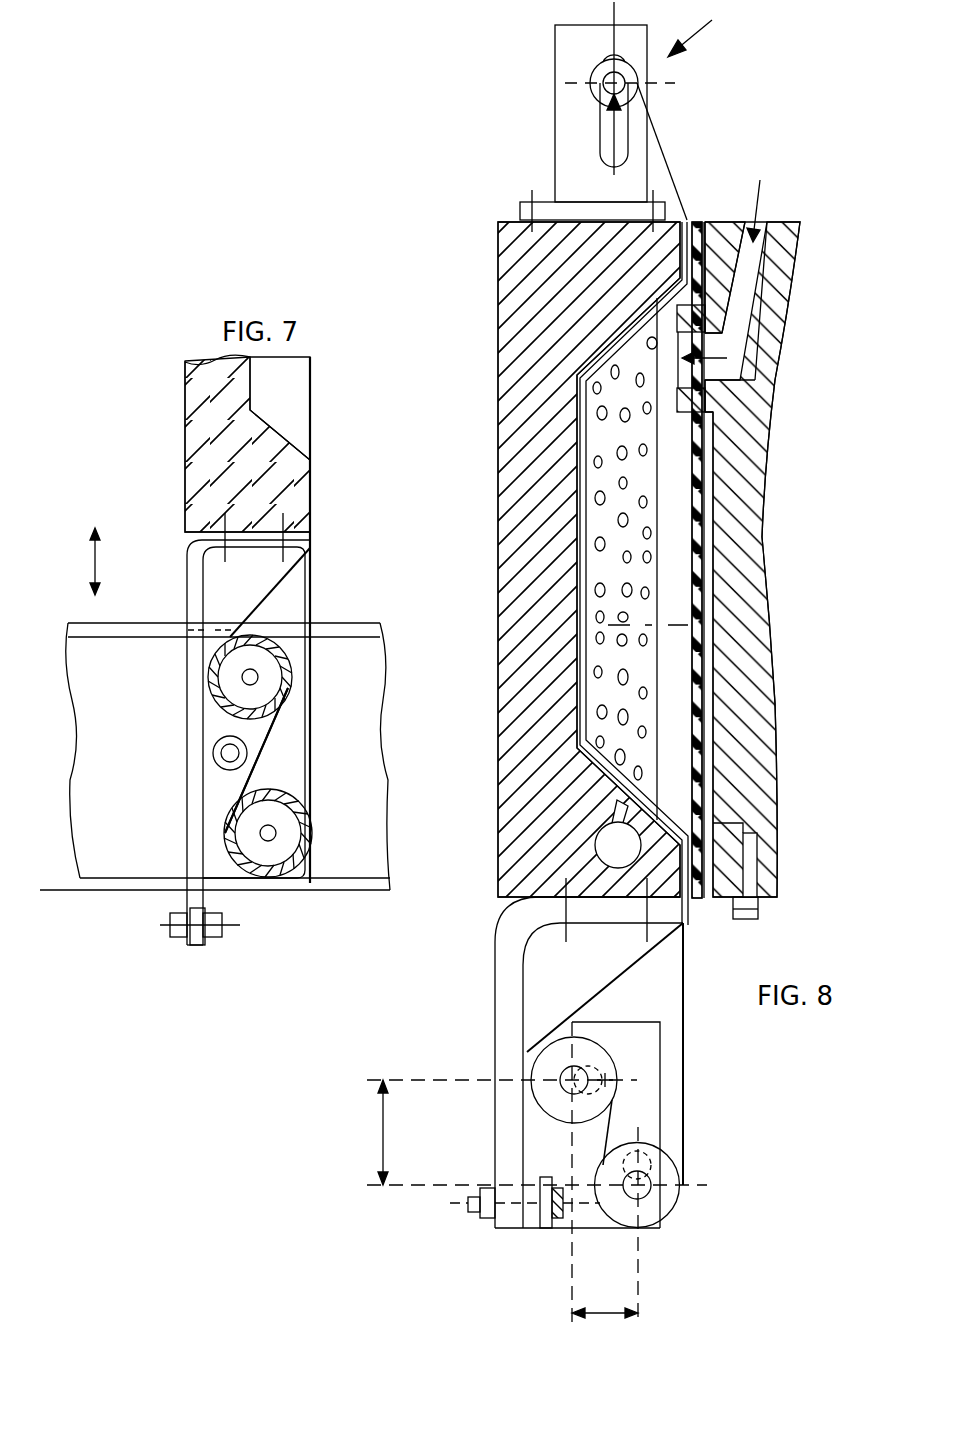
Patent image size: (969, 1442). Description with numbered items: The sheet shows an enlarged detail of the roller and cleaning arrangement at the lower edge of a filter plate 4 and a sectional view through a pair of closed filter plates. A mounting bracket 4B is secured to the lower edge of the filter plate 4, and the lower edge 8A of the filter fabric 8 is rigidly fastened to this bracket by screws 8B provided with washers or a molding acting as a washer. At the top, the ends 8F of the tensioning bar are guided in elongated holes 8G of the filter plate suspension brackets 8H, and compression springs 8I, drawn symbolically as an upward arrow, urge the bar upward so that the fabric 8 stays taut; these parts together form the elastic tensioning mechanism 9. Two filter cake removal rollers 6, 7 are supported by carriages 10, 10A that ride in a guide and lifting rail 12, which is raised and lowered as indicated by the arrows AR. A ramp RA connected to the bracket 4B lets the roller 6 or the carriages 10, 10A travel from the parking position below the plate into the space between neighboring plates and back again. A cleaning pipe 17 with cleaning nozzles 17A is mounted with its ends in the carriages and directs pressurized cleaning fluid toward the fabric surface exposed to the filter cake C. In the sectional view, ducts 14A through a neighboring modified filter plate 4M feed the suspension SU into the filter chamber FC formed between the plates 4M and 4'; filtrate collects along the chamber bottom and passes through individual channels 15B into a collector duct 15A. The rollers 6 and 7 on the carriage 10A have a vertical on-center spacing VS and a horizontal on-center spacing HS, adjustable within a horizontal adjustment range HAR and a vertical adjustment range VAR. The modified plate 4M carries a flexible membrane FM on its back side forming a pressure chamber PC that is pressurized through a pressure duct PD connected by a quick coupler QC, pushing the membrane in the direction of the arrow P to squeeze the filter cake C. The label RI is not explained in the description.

In FIG. 7, the filter plate 4 is at (232, 443).
In FIG. 8, the filter plate 4' is at (570, 582).
In FIG. 7, the mounting bracket 4B is at (187, 586).
In FIG. 8, the mounting bracket 4B is at (505, 989).
In FIG. 8, the modified filter plate 4M is at (767, 755).
In FIG. 7, the roller 6 is at (283, 692).
In FIG. 8, the roller 6 is at (537, 1092).
In FIG. 7, the roller 7 is at (290, 842).
In FIG. 8, the roller 7 is at (667, 1202).
In FIG. 7, the filter fabric 8 is at (312, 422).
In FIG. 8, the filter fabric 8 is at (682, 193).
In FIG. 7, the lower edge 8A is at (190, 948).
In FIG. 8, the lower edge 8A is at (540, 1220).
In FIG. 7, the screws 8B is at (222, 930).
In FIG. 8, the screws 8B is at (485, 1222).
In FIG. 8, the ends 8F is at (603, 80).
In FIG. 8, the elongated holes 8G is at (620, 148).
In FIG. 8, the filter plate suspension brackets 8H is at (568, 153).
In FIG. 8, the compression springs 8I is at (615, 118).
In FIG. 8, the elastic tensioning mechanism 9 is at (700, 29).
In FIG. 7, the carriage 10 is at (290, 777).
In FIG. 7, the carriage 10A is at (256, 760).
In FIG. 8, the carriage 10A is at (607, 1222).
In FIG. 7, the guide and lifting rail 12 is at (163, 623).
In FIG. 8, the ducts 14A is at (750, 295).
In FIG. 8, the collector duct 15A is at (630, 850).
In FIG. 8, the channels 15B is at (617, 807).
In FIG. 7, the cleaning pipe 17 is at (213, 745).
In FIG. 7, the cleaning nozzles 17A is at (236, 754).
In FIG. 7, the inclined surface RI is at (312, 494).
In FIG. 7, the ramp RA is at (287, 567).
In FIG. 8, the ramp RA is at (608, 983).
In FIG. 7, the arrows AR is at (118, 561).
In FIG. 8, the suspension SU is at (767, 198).
In FIG. 8, the filter cake C is at (627, 467).
In FIG. 8, the filter chamber FC is at (665, 653).
In FIG. 8, the arrow P is at (648, 612).
In FIG. 8, the pressure chamber PC is at (707, 627).
In FIG. 8, the flexible membrane FM is at (698, 683).
In FIG. 8, the pressure duct PD is at (750, 842).
In FIG. 8, the quick coupler QC is at (745, 922).
In FIG. 8, the horizontal adjustment range HAR is at (590, 1068).
In FIG. 8, the vertical adjustment range VAR is at (647, 1162).
In FIG. 8, the vertical on-center spacing VS is at (522, 1132).
In FIG. 8, the horizontal on-center spacing HS is at (605, 1173).